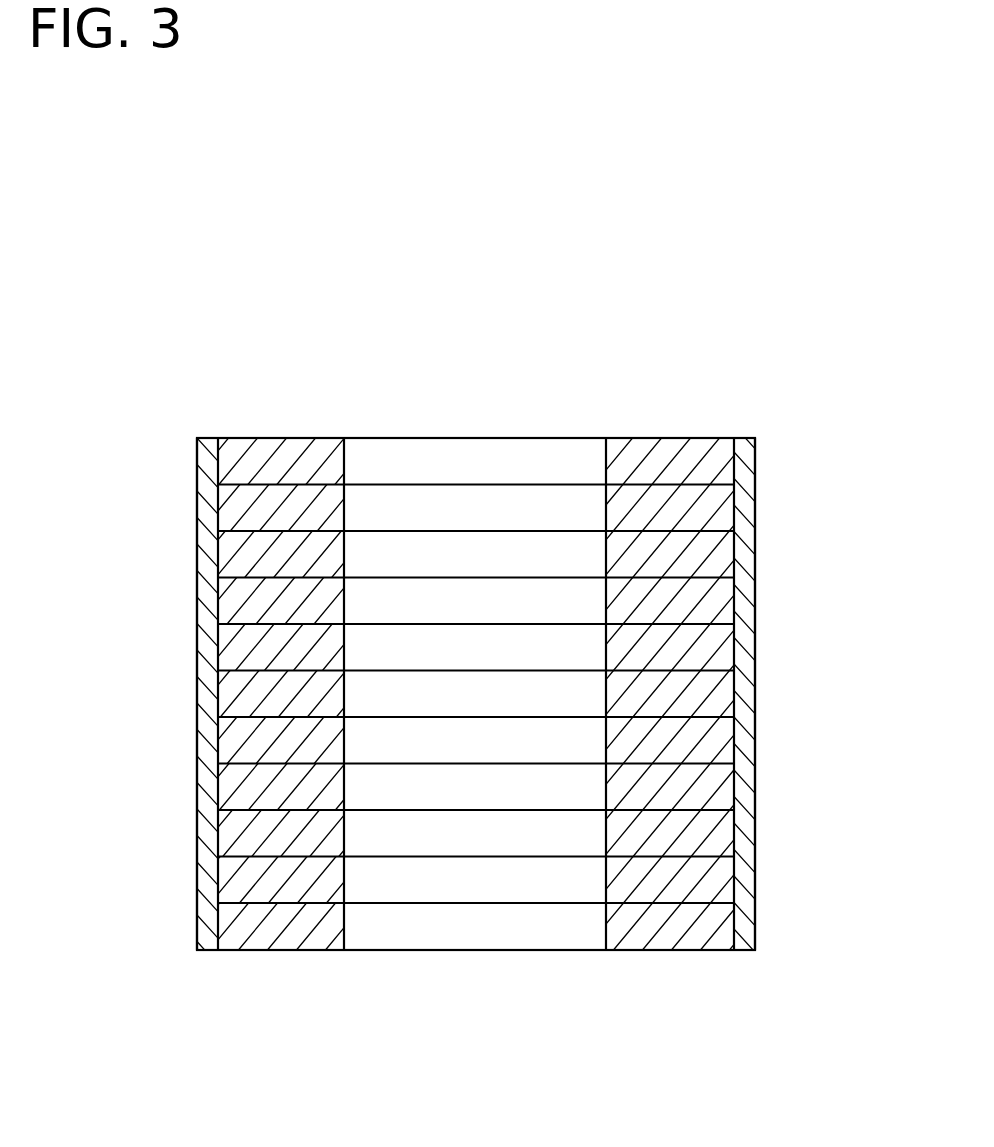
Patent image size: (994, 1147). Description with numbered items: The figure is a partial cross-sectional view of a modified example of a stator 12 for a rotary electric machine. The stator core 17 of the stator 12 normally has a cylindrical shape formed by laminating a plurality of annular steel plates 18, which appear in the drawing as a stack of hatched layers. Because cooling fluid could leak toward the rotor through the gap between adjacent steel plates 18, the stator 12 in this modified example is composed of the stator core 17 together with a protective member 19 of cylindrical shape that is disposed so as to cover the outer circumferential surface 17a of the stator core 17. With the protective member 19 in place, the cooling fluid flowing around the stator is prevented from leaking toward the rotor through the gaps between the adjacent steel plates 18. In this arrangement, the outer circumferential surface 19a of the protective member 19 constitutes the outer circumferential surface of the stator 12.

The stator 12 is at (180, 336).
The stator core 17 is at (303, 438).
The annular steel plates 18 is at (675, 447).
The outer circumferential surface of the stator core 17a is at (218, 508).
The protective member 19 is at (747, 508).
The outer circumferential surface of the protective member 19a is at (755, 565).